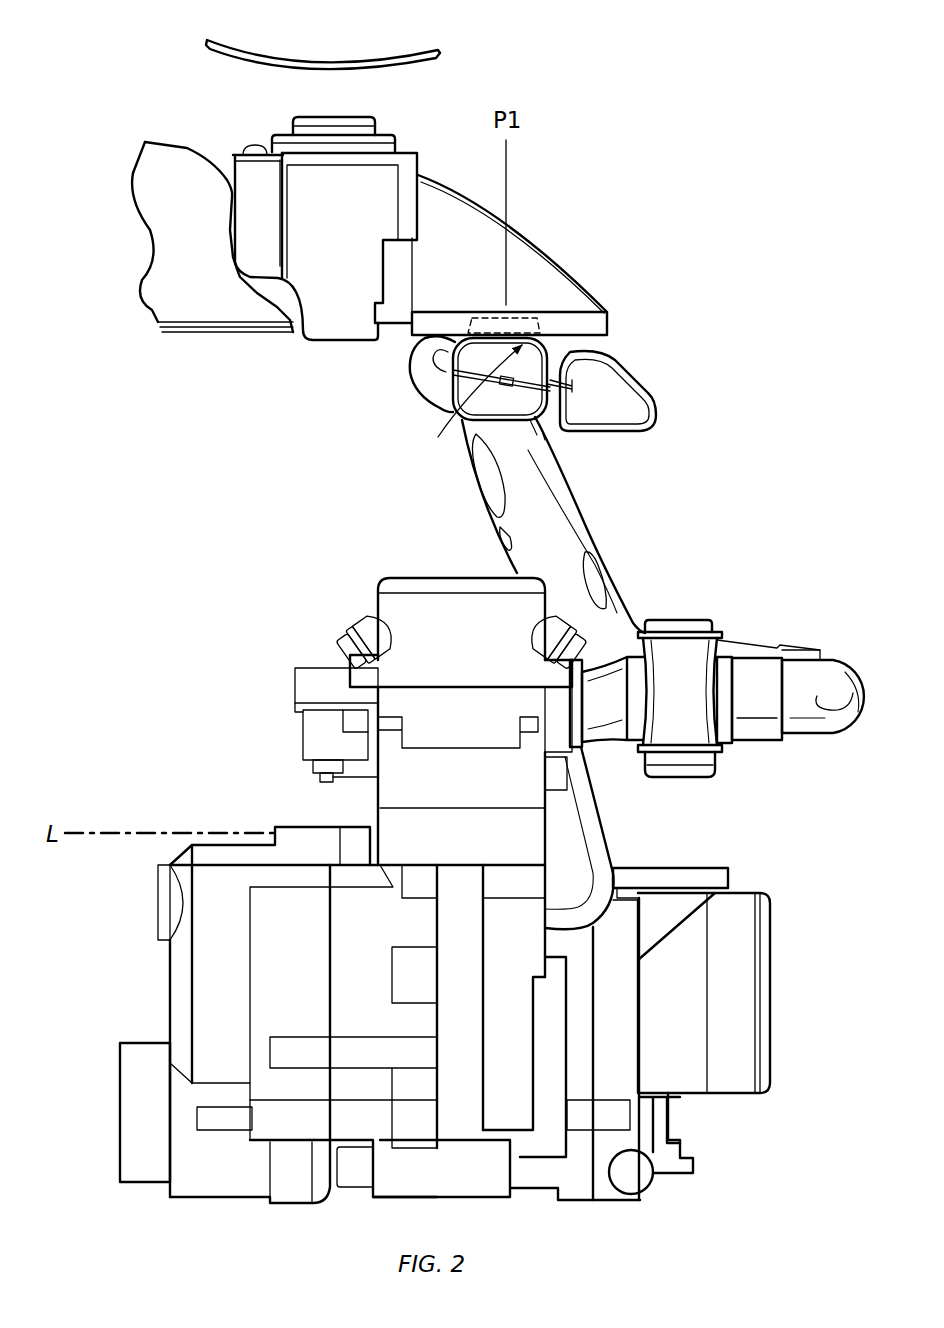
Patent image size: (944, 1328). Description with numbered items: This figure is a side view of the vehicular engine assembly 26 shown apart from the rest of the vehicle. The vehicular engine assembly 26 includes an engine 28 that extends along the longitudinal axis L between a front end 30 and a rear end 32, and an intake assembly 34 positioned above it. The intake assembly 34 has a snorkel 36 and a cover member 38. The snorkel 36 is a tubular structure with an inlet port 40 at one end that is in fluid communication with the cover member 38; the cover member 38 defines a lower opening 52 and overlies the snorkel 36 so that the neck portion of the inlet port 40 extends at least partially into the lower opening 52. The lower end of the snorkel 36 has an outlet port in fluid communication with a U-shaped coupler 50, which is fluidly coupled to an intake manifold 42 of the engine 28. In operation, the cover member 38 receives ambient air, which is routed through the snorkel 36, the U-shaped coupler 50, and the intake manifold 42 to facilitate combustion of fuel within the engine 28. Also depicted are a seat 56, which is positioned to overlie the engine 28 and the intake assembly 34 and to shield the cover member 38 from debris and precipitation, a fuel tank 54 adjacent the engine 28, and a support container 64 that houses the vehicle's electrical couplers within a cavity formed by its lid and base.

The vehicular engine assembly 26 is at (604, 170).
The engine 28 is at (287, 809).
The front end 30 is at (166, 992).
The rear end 32 is at (775, 996).
The intake assembly 34 is at (635, 333).
The snorkel 36 is at (576, 500).
The cover member 38 is at (552, 258).
The inlet port 40 is at (460, 321).
The intake manifold 42 is at (466, 617).
The U-shaped coupler 50 is at (818, 698).
The lower opening 52 is at (466, 404).
The fuel tank 54 is at (204, 249).
The seat 56 is at (303, 57).
The support container 64 is at (357, 115).